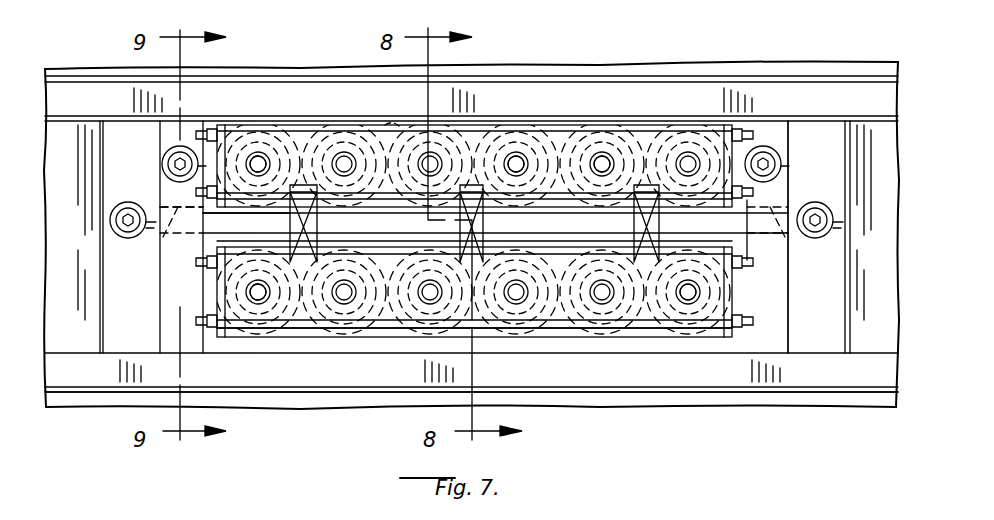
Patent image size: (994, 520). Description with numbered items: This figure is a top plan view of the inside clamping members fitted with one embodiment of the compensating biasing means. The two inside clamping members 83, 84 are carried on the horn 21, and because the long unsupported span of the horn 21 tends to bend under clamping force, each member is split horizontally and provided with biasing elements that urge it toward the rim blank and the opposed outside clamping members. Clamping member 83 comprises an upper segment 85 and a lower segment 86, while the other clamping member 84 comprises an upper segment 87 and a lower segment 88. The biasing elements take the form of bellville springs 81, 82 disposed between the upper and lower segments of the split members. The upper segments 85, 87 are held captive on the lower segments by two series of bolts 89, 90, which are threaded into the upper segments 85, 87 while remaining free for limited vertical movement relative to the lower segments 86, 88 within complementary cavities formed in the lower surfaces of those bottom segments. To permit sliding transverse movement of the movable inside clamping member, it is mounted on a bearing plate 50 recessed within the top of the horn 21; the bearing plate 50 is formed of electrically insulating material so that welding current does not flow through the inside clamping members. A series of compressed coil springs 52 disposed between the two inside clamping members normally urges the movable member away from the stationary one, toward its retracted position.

The horn 21 is at (662, 403).
The bearing plate 50 is at (800, 342).
The compressed coil springs 52 is at (300, 222).
The bellville springs 81 is at (319, 132).
The bellville springs 82 is at (285, 320).
The split inside clamping member 83 is at (663, 116).
The split inside clamping member 84 is at (708, 350).
The upper segment 85 is at (398, 125).
The lower segment 86 is at (165, 237).
The upper segment 87 is at (372, 330).
The lower segment 88 is at (252, 235).
The bolts 89 is at (258, 160).
The bolts 90 is at (258, 297).